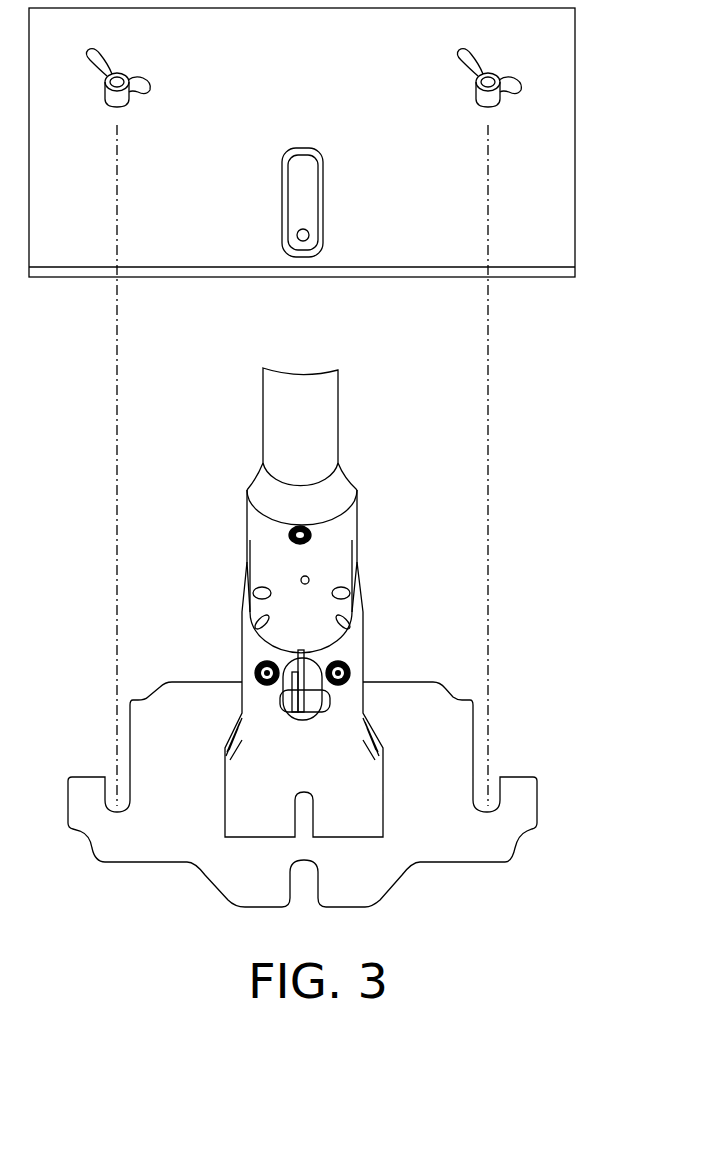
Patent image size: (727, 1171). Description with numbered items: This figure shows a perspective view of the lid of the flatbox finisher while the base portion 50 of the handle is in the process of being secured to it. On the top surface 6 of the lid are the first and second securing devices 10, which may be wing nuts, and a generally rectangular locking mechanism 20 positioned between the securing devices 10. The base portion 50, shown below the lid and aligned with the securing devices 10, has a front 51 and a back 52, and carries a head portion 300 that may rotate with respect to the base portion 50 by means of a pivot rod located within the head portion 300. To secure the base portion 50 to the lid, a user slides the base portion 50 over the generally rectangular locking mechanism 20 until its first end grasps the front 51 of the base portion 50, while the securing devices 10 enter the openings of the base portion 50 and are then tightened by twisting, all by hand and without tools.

The top surface 6 is at (548, 150).
The securing device 10 is at (120, 70).
The generally rectangular locking mechanism 20 is at (302, 192).
The head portion 300 is at (350, 650).
The base portion 50 is at (462, 848).
The front 51 is at (262, 910).
The back 52 is at (398, 682).